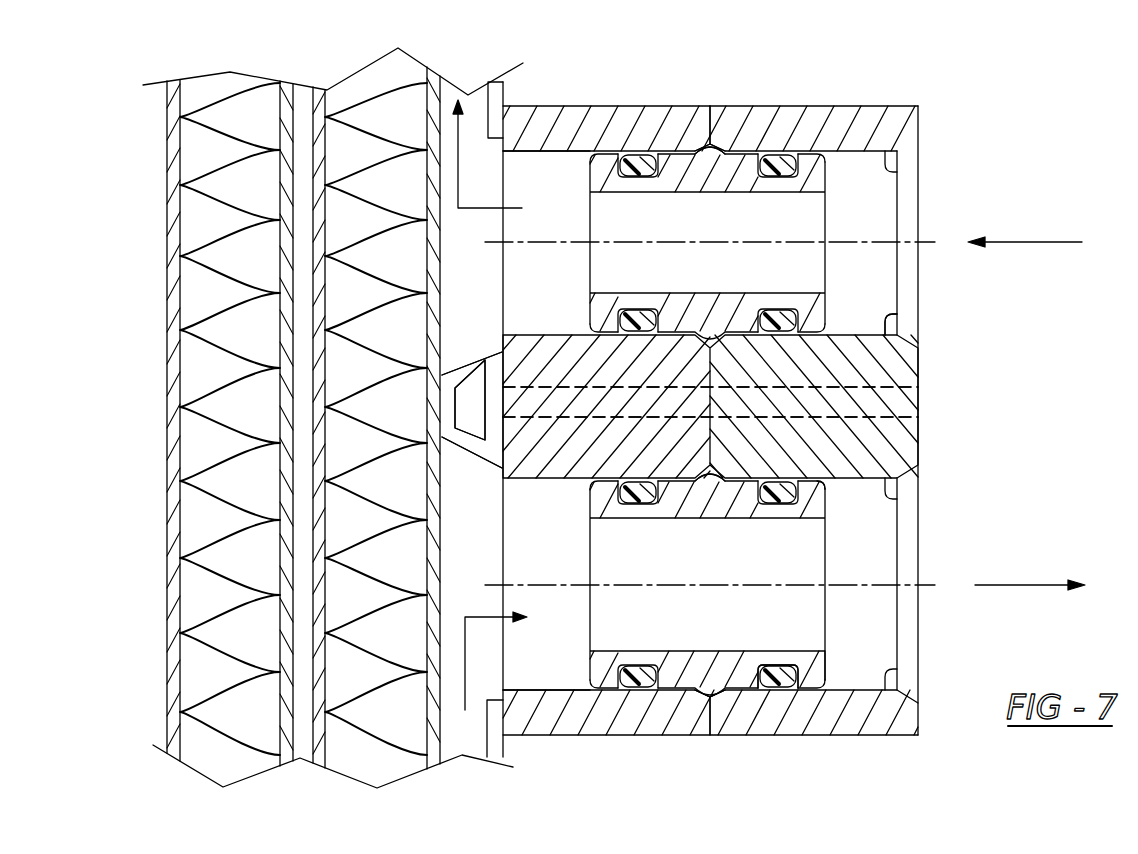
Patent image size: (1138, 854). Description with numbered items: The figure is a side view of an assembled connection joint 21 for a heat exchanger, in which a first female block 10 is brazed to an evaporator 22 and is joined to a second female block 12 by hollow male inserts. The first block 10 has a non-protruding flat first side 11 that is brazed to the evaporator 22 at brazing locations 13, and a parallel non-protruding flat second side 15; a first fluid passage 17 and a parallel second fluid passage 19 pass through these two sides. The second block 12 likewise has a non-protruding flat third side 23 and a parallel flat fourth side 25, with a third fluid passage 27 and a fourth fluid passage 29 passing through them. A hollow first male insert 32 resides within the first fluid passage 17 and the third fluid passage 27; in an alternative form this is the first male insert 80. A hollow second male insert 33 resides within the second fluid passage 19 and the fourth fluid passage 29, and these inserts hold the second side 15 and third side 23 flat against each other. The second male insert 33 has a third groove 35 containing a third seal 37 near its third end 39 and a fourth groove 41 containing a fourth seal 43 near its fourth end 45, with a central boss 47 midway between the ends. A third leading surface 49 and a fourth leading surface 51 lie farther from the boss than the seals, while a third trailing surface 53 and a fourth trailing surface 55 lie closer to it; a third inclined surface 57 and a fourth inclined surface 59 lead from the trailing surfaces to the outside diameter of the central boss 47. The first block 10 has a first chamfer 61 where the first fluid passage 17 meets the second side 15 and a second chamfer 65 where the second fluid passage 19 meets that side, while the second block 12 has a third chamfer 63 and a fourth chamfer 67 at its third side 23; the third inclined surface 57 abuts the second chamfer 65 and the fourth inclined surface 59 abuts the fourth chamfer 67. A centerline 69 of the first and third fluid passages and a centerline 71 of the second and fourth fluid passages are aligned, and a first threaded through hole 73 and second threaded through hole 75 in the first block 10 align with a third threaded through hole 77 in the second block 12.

The first female block 10 is at (645, 106).
The first side 11 is at (503, 148).
The second female block 12 is at (837, 107).
The brazing locations 13 is at (498, 92).
The second side 15 is at (747, 107).
The first fluid passage 17 is at (544, 156).
The second fluid passage 19 is at (555, 673).
The connection joint 21 is at (942, 60).
The evaporator 22 is at (165, 318).
The third side 23 is at (698, 107).
The fourth side 25 is at (920, 127).
The third fluid passage 27 is at (920, 167).
The fourth fluid passage 29 is at (896, 662).
The first male insert 32 is at (850, 172).
The first male insert 80 is at (891, 324).
The second male insert 33 is at (843, 672).
The third groove 35 is at (658, 682).
The third seal 37 is at (637, 678).
The third end 39 is at (589, 498).
The fourth groove 41 is at (810, 678).
The fourth seal 43 is at (778, 680).
The fourth end 45 is at (818, 488).
The central boss 47 is at (713, 690).
The third leading surface 49 is at (603, 484).
The fourth leading surface 51 is at (896, 448).
The third trailing surface 53 is at (680, 495).
The fourth trailing surface 55 is at (753, 488).
The third inclined surface 57 is at (700, 495).
The fourth inclined surface 59 is at (713, 498).
The first chamfer 61 is at (692, 142).
The third chamfer 63 is at (740, 140).
The second chamfer 65 is at (668, 713).
The fourth chamfer 67 is at (712, 713).
The centerline 69 is at (928, 242).
The centerline 71 is at (926, 585).
The first threaded through hole 73 is at (533, 420).
The second threaded through hole 75 is at (470, 400).
The third threaded through hole 77 is at (918, 372).